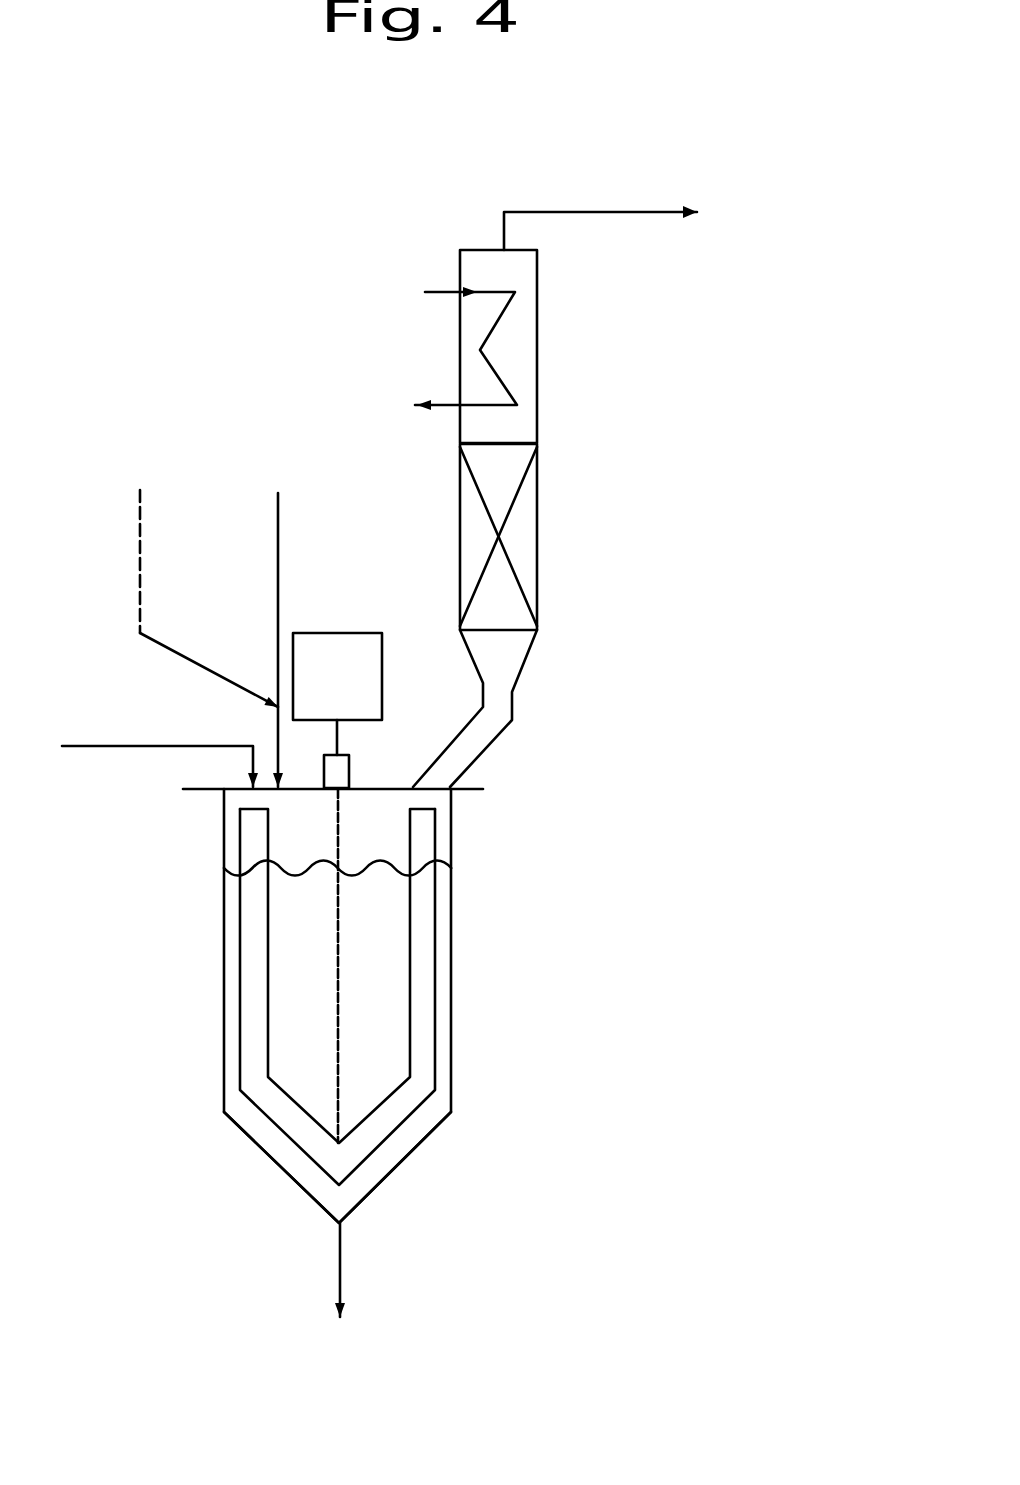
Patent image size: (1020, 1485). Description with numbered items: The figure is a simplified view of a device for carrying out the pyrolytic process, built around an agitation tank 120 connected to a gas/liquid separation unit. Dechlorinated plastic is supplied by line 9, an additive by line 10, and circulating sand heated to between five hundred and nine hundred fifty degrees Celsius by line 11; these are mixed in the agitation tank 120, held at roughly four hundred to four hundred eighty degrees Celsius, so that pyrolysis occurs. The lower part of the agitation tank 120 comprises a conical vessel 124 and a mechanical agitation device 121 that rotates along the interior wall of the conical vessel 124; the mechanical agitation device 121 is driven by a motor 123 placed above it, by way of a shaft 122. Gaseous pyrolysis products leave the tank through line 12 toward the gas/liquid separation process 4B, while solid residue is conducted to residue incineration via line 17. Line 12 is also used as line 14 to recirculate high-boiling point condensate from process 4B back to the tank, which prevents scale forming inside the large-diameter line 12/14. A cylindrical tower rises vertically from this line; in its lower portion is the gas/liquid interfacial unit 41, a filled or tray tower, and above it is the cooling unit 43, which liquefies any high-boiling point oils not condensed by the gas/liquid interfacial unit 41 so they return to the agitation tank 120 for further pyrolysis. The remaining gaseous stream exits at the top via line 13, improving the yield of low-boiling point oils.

The gas/liquid separation process 4B is at (540, 378).
The line 9 is at (102, 748).
The line 10 is at (140, 575).
The line 11 is at (280, 568).
The line 12 is at (550, 708).
The line 14 is at (497, 735).
The gas outlet line 13 is at (667, 212).
The line 17 is at (340, 1260).
The gas/liquid interfacial unit 41 is at (528, 538).
The cooling unit 43 is at (498, 320).
The agitation tank 120 is at (455, 1037).
The mechanical agitation device 121 is at (385, 1118).
The shaft 122 is at (337, 953).
The motor 123 is at (360, 633).
The conical vessel 124 is at (380, 1188).